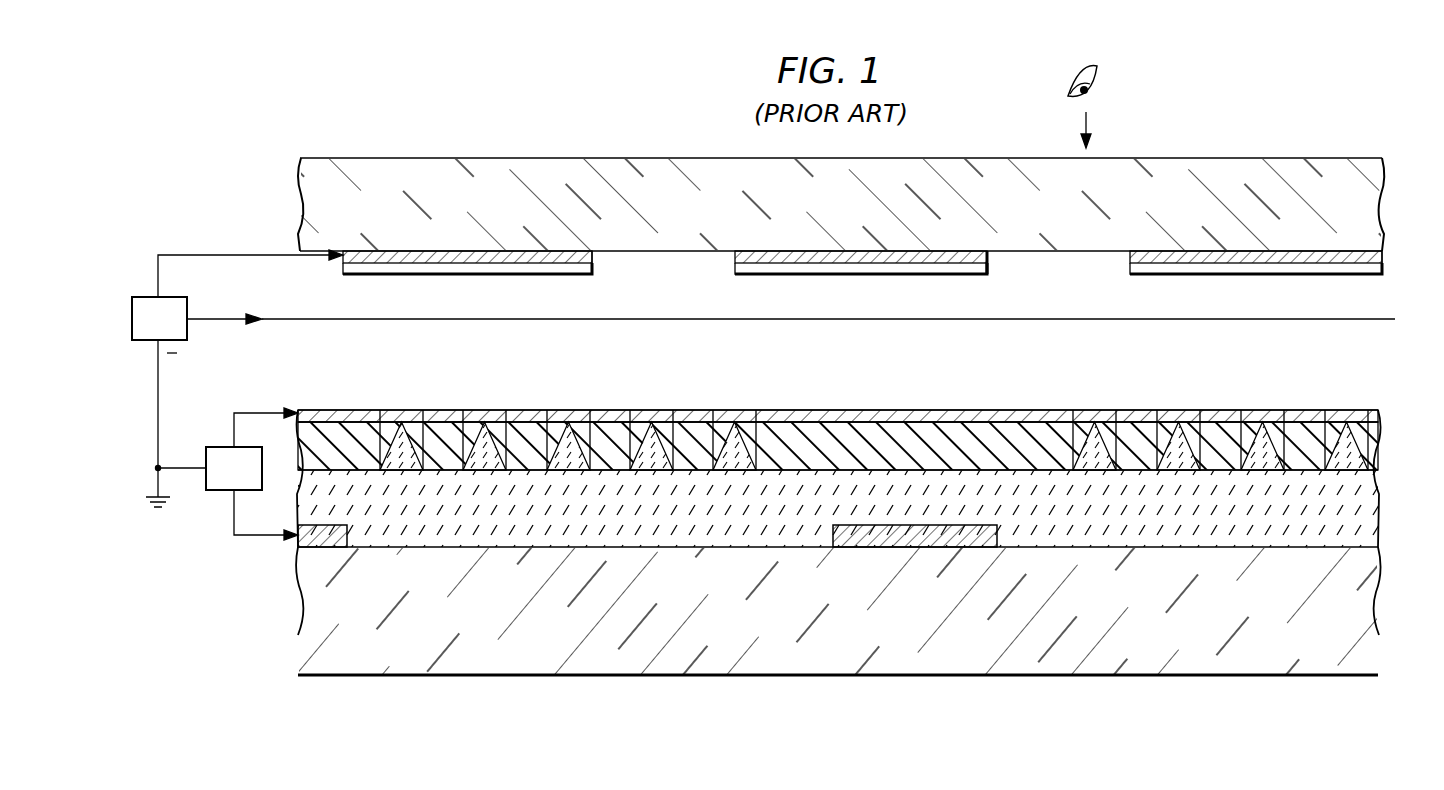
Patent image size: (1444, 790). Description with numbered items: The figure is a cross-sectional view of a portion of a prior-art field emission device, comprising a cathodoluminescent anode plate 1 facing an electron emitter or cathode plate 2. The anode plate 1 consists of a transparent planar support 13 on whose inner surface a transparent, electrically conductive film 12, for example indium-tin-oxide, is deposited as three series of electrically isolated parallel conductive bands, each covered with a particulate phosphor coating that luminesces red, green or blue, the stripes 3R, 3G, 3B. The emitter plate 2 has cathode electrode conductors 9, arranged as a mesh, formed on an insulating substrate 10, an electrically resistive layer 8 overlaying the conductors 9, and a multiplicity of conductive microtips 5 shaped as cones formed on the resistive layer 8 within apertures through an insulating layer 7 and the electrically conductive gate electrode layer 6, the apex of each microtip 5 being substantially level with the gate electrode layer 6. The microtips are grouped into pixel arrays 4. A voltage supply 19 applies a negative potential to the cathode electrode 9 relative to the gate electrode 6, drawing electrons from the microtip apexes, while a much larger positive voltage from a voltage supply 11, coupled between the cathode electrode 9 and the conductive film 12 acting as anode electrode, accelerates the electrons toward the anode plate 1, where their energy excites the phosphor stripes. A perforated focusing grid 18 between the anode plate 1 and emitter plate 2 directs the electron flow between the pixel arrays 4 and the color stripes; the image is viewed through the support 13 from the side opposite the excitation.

The anode plate 1 is at (1404, 157).
The emitter plate 2 is at (1404, 407).
The red phosphor coating 3R is at (342, 262).
The green phosphor coating 3G is at (735, 267).
The blue phosphor coating 3B is at (1130, 267).
The pixel array 4 is at (838, 403).
The microtip 5 is at (397, 410).
The gate electrode layer 6 is at (445, 408).
The insulating layer 7 is at (750, 386).
The resistive layer 8 is at (300, 493).
The cathode electrode conductor 9 is at (913, 548).
The insulating substrate 10 is at (302, 588).
The voltage supply 11 is at (142, 297).
The transparent conductive film 12 is at (990, 264).
The transparent planar support 13 is at (1228, 157).
The focusing grid 18 is at (1360, 328).
The voltage supply 19 is at (217, 447).